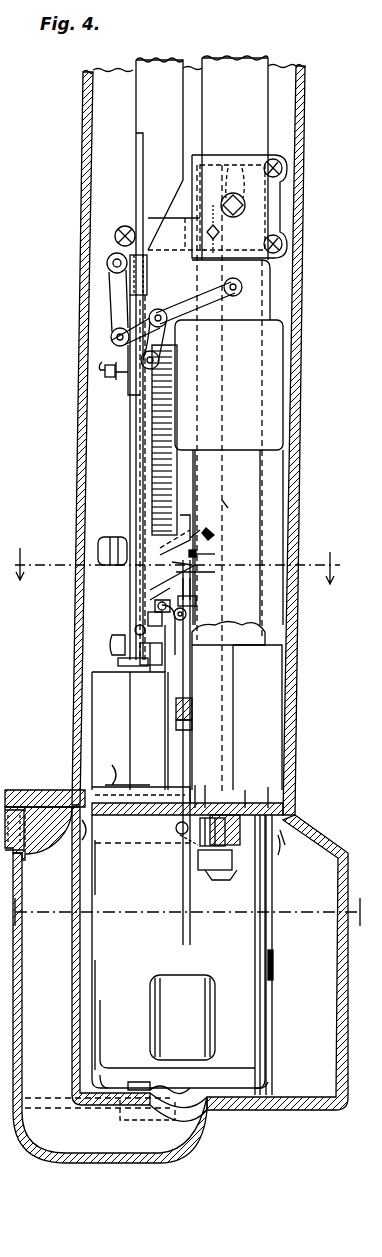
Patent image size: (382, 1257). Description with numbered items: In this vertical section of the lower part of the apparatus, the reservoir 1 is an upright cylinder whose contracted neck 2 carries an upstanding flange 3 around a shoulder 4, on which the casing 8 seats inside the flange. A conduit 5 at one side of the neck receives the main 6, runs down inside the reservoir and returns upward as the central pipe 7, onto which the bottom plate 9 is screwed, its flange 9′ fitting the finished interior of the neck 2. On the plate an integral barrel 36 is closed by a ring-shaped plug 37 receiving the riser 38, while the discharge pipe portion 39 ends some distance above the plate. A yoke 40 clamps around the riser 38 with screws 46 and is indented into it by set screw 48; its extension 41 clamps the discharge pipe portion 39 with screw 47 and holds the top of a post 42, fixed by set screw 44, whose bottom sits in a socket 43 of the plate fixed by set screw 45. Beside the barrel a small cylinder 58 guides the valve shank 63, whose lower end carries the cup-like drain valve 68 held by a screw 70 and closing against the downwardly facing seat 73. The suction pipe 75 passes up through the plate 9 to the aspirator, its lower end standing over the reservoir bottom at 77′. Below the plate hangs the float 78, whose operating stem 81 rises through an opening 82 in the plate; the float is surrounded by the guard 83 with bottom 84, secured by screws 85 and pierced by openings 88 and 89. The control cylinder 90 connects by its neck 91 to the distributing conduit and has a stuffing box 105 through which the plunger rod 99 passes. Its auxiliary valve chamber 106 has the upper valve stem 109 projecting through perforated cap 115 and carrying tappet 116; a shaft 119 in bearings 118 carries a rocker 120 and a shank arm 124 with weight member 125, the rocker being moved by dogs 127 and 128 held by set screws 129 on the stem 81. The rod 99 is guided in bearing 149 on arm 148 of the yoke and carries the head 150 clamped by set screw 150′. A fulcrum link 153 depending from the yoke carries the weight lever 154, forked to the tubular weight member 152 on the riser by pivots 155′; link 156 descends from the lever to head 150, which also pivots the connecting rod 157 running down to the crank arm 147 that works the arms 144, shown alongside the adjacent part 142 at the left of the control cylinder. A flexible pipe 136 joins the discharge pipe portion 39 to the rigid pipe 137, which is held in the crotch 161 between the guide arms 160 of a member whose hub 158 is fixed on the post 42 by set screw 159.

The reservoir 1 is at (332, 1030).
The neck 2 is at (298, 819).
The flange 3 is at (298, 771).
The shoulder 4 is at (296, 793).
The conduit 5 is at (42, 792).
The pipe or main 6 is at (14, 792).
The pipe 7 is at (196, 1088).
The casing 8 is at (298, 490).
The bottom plate 9 is at (187, 847).
The upwardly extending flange 9′ is at (268, 784).
The barrel 36 is at (282, 688).
The plug 37 is at (270, 645).
The riser 38 is at (258, 122).
The discharge pipe portion 39 is at (142, 108).
The yoke 40 is at (230, 155).
The extension 41 is at (157, 220).
The post 42 is at (224, 350).
The socket 43 is at (180, 846).
The set screw 44 is at (222, 192).
The set screw 45 is at (187, 853).
The screws 46 is at (284, 170).
The screw 47 is at (120, 228).
The set screw 48 is at (233, 230).
The small cylinder 58 is at (230, 709).
The valve shank 63 is at (224, 832).
The drain valve 68 is at (232, 862).
The screw 70 is at (225, 876).
The seat 73 is at (206, 788).
The suction pipe 75 is at (138, 1083).
The pipe 77′ is at (136, 1118).
The float 78 is at (203, 1016).
The operating stem 81 is at (190, 674).
The opening 82 is at (178, 818).
The guard 83 is at (272, 957).
The bottom 84 is at (270, 1085).
The screws 85 is at (88, 830).
The openings 88 is at (98, 996).
The openings 89 is at (96, 894).
The cylinder 90 is at (95, 703).
The neck 91 is at (114, 762).
The plunger rod 99 is at (136, 163).
The stuffing box 105 is at (122, 672).
The auxiliary valve chamber 106 is at (133, 706).
The stem 109 is at (150, 590).
The perforated cap 115 is at (148, 670).
The tappet 116 is at (148, 618).
The bearings 118 is at (188, 616).
The shaft 119 is at (204, 600).
The rocker 120 is at (155, 605).
The shank arm 124 is at (216, 554).
The weight member 125 is at (216, 573).
The dog 127 is at (192, 708).
The dog 128 is at (191, 598).
The set screws 129 is at (192, 728).
The flexible pipe 136 is at (168, 480).
The upper larger rigid pipe 137 is at (131, 508).
The plate 142 is at (122, 653).
The arms 144 is at (117, 644).
The crank arm 147 is at (135, 631).
The arm 148 is at (107, 272).
The bearing 149 is at (150, 264).
The head 150 is at (128, 392).
The set screw 150′ is at (105, 365).
The tubular weight member 152 is at (284, 375).
The fulcrum link 153 is at (122, 308).
The weight lever 154 is at (195, 299).
The pivots 155′ is at (244, 297).
The link 156 is at (162, 327).
The connecting rod 157 is at (145, 424).
The hub 158 is at (240, 496).
The set screw 159 is at (216, 532).
The guide arms 160 is at (110, 537).
The crotch 161 is at (193, 534).